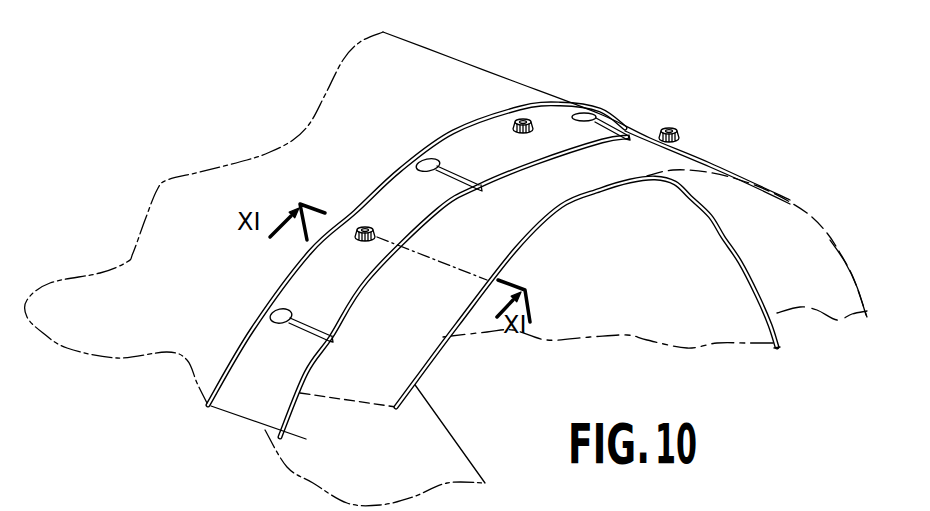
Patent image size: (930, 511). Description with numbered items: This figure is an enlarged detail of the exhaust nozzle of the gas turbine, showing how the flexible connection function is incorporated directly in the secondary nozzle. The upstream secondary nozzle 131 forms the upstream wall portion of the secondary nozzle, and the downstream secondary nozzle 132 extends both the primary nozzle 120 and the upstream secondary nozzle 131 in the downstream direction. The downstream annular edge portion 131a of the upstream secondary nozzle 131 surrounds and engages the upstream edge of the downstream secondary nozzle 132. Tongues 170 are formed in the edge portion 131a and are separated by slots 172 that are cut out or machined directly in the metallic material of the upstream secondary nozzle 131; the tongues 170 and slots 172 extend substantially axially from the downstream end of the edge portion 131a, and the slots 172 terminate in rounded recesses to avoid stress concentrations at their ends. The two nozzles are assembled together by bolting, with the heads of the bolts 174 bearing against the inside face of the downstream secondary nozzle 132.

The upstream secondary nozzle 131 is at (347, 108).
The downstream annular edge portion 131a is at (477, 140).
The tongues 170 is at (417, 200).
The slots 172 is at (315, 327).
The bolts 174 is at (358, 226).
The downstream secondary nozzle 132 is at (555, 235).
The primary nozzle 120 is at (740, 249).